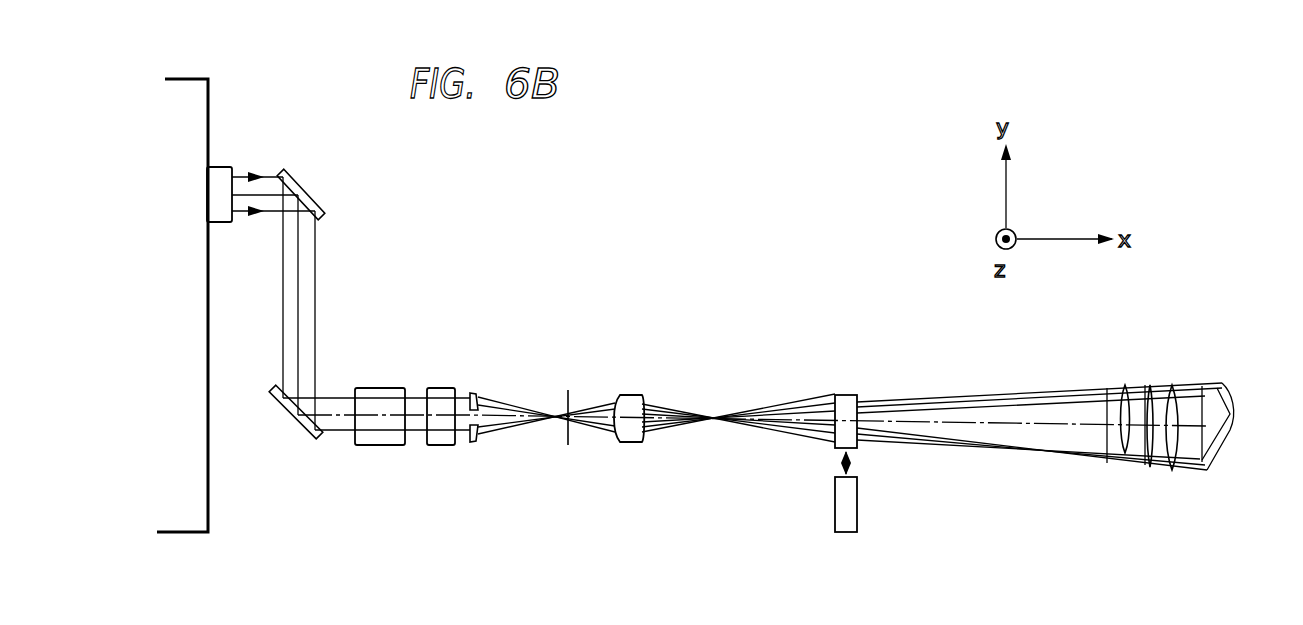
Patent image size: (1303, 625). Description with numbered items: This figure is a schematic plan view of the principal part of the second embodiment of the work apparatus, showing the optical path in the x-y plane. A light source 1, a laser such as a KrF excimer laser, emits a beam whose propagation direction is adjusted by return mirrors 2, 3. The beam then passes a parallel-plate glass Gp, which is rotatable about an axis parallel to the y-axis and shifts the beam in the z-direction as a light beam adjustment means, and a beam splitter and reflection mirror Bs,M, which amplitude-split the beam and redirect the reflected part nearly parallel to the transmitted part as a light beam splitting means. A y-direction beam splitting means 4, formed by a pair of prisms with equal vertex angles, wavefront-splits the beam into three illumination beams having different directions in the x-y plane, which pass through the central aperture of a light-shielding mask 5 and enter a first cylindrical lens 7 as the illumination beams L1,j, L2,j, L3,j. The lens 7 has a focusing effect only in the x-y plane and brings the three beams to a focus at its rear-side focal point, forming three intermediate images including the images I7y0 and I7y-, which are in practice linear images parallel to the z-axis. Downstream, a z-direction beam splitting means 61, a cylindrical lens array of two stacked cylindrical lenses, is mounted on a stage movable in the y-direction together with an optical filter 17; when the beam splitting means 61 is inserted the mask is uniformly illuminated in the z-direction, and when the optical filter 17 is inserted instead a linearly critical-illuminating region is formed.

The light source 1 is at (209, 112).
The return mirror 2 is at (304, 180).
The return mirror 3 is at (290, 416).
The parallel-plate glass Gp is at (375, 388).
The beam splitter and reflection mirror Bs,M is at (438, 388).
The y-direction beam splitting means 4 is at (476, 394).
The light-shielding mask 5 is at (566, 392).
The first cylindrical lens 7 is at (622, 395).
The intermediate image I7y0 is at (714, 418).
The intermediate image I7y- is at (710, 420).
The z-direction beam splitting means 61 is at (842, 395).
The optical filter 17 is at (835, 499).
The illumination beam L1,j is at (1125, 385).
The illumination beam L2,j is at (1150, 387).
The illumination beam L3,j is at (1172, 387).